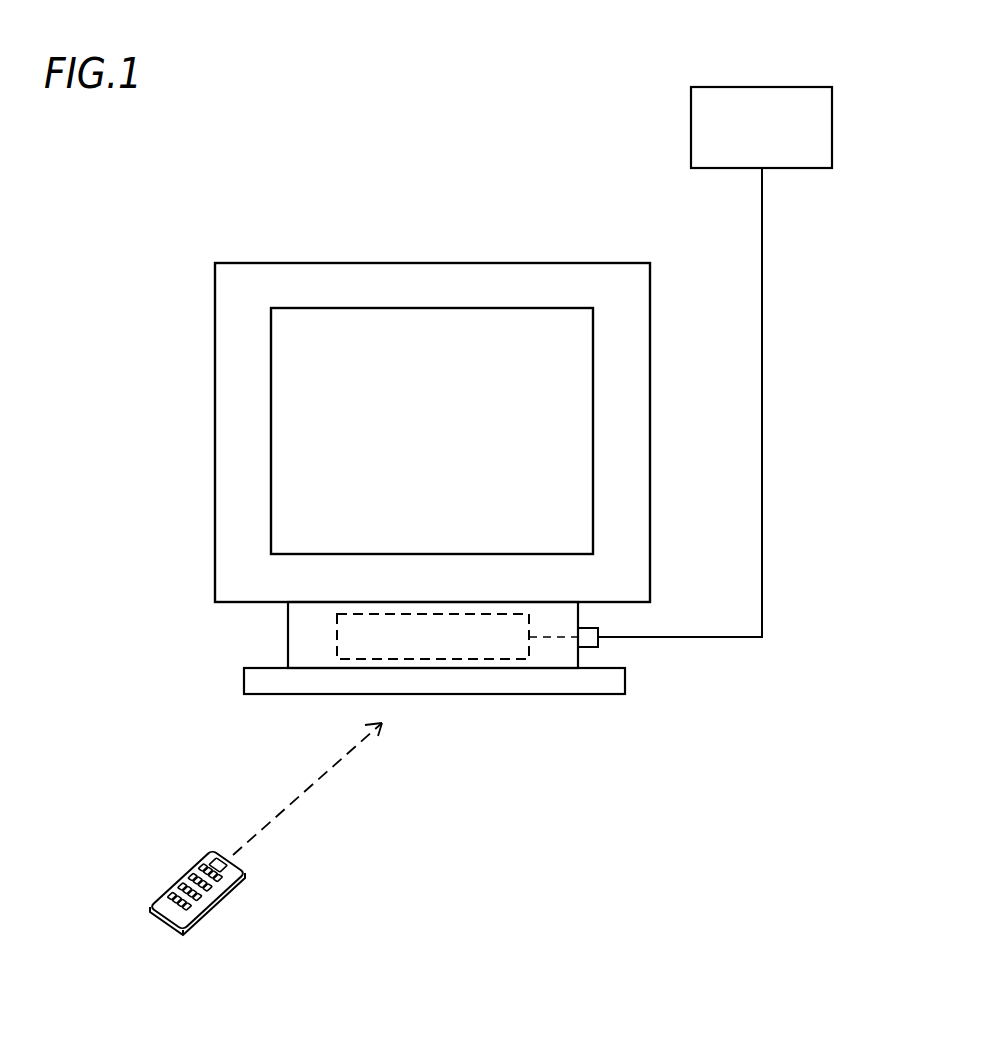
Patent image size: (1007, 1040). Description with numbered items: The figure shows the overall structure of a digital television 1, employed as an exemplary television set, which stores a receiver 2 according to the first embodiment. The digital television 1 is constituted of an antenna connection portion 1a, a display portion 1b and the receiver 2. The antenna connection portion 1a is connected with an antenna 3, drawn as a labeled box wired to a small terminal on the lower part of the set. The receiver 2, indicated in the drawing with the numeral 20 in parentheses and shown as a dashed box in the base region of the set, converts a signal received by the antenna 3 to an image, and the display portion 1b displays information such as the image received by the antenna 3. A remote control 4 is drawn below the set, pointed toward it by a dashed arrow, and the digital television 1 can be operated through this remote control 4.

The digital television 1 is at (252, 202).
The antenna connection portion 1a is at (599, 645).
The display portion 1b is at (593, 360).
The receiver 2 is at (389, 636).
The receiver 20 is at (337, 633).
The antenna 3 is at (802, 87).
The remote control 4 is at (218, 903).